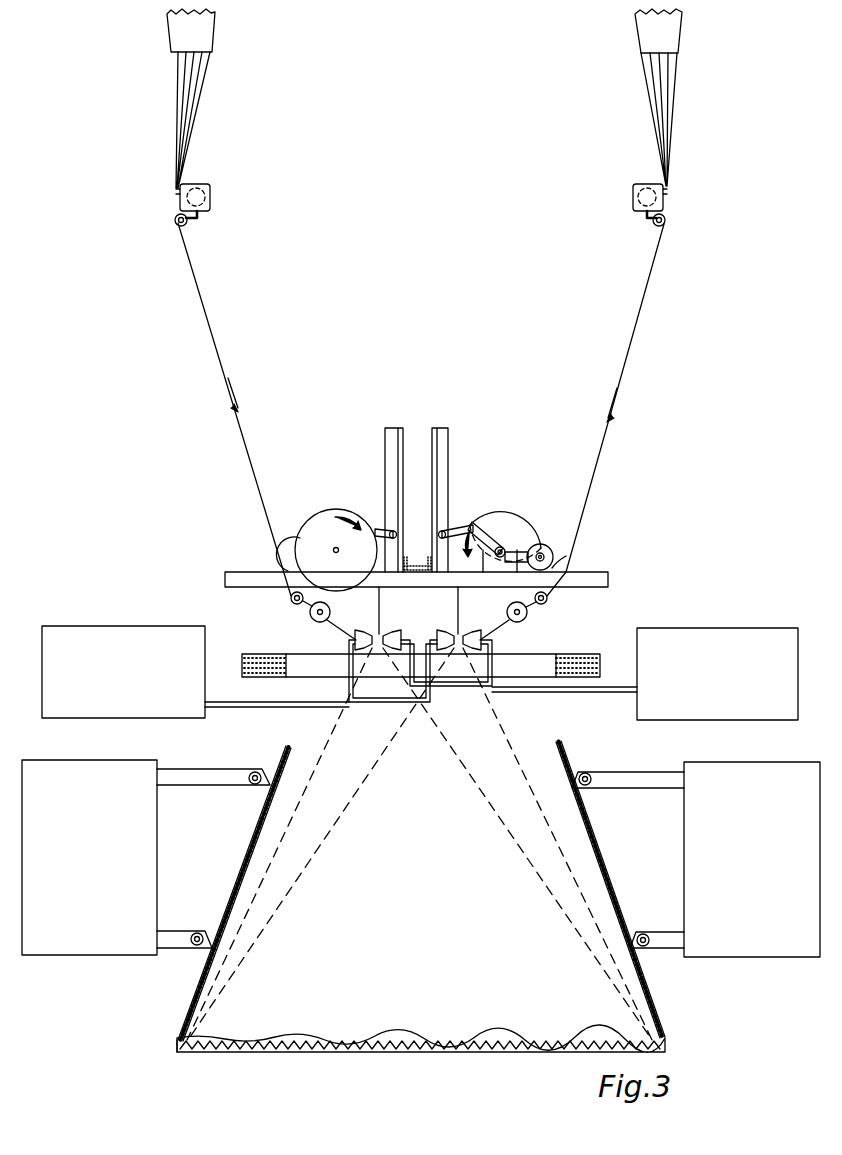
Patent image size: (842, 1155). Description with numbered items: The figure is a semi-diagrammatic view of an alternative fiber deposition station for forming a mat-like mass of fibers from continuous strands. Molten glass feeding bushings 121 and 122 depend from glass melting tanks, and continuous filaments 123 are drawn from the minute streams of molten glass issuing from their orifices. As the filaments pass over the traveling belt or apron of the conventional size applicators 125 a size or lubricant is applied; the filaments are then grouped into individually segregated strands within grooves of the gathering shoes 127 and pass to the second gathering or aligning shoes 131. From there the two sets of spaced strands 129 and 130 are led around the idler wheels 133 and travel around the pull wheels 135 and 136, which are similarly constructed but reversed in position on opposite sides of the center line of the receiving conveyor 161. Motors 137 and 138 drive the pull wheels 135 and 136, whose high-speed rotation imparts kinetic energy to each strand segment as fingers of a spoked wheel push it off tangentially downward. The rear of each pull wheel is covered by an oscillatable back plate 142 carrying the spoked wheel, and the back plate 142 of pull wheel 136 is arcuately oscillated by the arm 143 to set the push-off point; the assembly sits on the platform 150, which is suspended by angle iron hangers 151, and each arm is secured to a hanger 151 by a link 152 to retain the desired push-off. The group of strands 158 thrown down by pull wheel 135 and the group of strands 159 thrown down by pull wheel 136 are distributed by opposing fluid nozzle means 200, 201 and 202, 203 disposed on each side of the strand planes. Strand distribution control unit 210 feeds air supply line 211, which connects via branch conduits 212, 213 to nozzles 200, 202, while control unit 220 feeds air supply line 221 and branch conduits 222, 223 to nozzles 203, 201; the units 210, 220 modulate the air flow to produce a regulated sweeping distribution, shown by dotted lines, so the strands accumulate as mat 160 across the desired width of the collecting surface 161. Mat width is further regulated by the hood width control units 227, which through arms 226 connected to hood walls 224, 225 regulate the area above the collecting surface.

The molten glass feeding bushing 121 is at (216, 40).
The molten glass feeding bushing 122 is at (680, 36).
The continuous filaments 123 is at (185, 90).
The size applicator 125 is at (211, 184).
The gathering shoe 127 is at (186, 225).
The set of spaced strands 129 is at (200, 298).
The set of spaced strands 130 is at (647, 292).
The second gathering or aligning shoe 131 is at (290, 598).
The idler wheel 133 is at (310, 614).
The pull wheel 135 is at (335, 508).
The pull wheel 136 is at (497, 510).
The motor 137 is at (282, 546).
The motor 138 is at (568, 556).
The back plate 142 is at (540, 545).
The arm 143 is at (498, 545).
The platform 150 is at (606, 571).
The angle iron hanger 151 is at (412, 428).
The link 152 is at (386, 530).
The group of strands 158 is at (377, 605).
The group of strands 159 is at (460, 604).
The mat 160 is at (330, 1037).
The collection surface 161 is at (178, 1046).
The fluid nozzle 200 is at (352, 635).
The fluid nozzle 201 is at (390, 631).
The fluid nozzle 202 is at (443, 628).
The fluid nozzle 203 is at (484, 636).
The strand distribution control unit 210 is at (152, 622).
The air supply line 211 is at (272, 700).
The branch conduit 212 is at (328, 668).
The branch conduit 213 is at (432, 682).
The strand distribution control unit 220 is at (750, 624).
The air supply line 221 is at (628, 686).
The branch conduit 222 is at (552, 665).
The branch conduit 223 is at (400, 670).
The hood wall 224 is at (562, 742).
The hood wall 225 is at (280, 746).
The arm 226 is at (216, 767).
The hood width control unit 227 is at (110, 760).